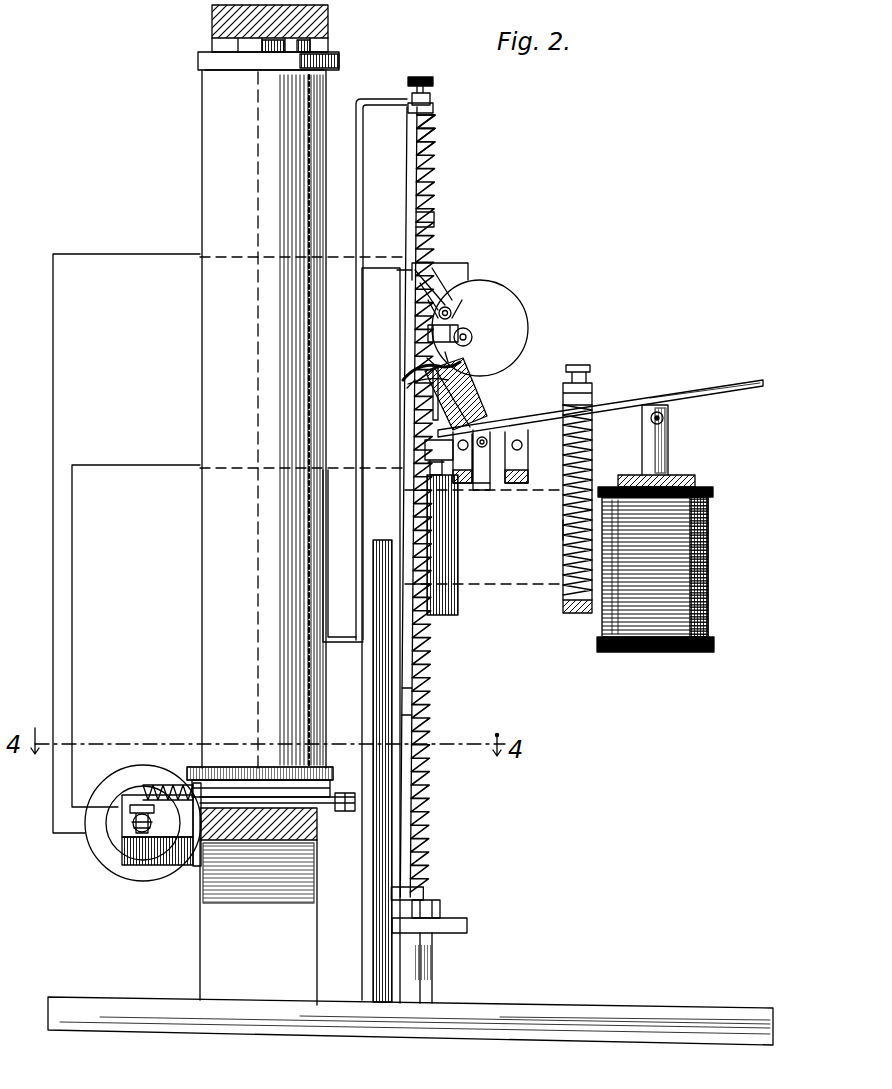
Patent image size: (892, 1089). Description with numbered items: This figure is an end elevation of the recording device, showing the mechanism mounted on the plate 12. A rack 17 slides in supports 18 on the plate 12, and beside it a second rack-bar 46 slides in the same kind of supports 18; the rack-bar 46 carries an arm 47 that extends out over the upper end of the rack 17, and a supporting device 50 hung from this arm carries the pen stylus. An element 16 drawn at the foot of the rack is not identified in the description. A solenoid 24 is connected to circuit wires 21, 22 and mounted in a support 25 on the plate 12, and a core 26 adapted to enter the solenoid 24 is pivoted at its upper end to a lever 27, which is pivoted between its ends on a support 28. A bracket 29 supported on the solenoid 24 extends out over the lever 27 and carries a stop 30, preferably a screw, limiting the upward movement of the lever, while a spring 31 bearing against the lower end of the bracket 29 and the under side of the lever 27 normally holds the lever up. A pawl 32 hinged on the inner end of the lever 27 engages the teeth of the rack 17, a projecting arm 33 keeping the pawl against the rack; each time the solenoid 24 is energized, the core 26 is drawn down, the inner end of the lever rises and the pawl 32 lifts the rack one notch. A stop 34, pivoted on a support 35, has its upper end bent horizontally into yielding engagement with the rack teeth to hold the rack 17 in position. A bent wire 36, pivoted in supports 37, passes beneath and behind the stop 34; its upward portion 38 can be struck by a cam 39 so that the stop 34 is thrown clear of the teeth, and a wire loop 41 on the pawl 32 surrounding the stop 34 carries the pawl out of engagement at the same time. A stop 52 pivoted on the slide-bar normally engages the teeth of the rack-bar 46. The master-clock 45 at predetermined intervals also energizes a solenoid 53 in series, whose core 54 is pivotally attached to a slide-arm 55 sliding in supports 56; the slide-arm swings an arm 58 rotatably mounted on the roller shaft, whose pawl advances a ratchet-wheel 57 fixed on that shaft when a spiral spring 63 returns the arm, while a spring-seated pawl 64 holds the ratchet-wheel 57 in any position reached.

The plate 12 is at (380, 683).
The clamping nut 16 is at (457, 925).
The rack 17 is at (427, 830).
The supports 18 is at (423, 262).
The circuit wire 21 is at (714, 638).
The circuit wire 22 is at (713, 498).
The solenoid 24 is at (713, 572).
The support 25 is at (720, 465).
The core 26 is at (668, 462).
The lever 27 is at (630, 400).
The support 28 is at (524, 430).
The bracket 29 is at (593, 463).
The stop 30 is at (585, 372).
The spring 31 is at (563, 530).
The pawl 32 is at (468, 350).
The projecting arm 33 is at (444, 527).
The stop 34 is at (485, 432).
The support 35 is at (483, 490).
The bent wire 36 is at (425, 425).
The supports 37 is at (470, 320).
The portion of wire 38 is at (455, 297).
The cam 39 is at (425, 333).
The wire loop 41 is at (458, 380).
The master-clock 45 is at (355, 644).
The second rack-bar 46 is at (410, 172).
The arm 47 is at (435, 108).
The supporting device 50 is at (372, 238).
The stop 52 is at (470, 278).
The solenoid 53 is at (134, 772).
The core 54 is at (117, 843).
The slide-arm 55 is at (128, 810).
The supports 56 is at (158, 860).
The ratchet-wheel 57 is at (222, 771).
The arm 58 is at (230, 812).
The spiral spring 63 is at (167, 788).
The spring-seated pawl 64 is at (344, 812).